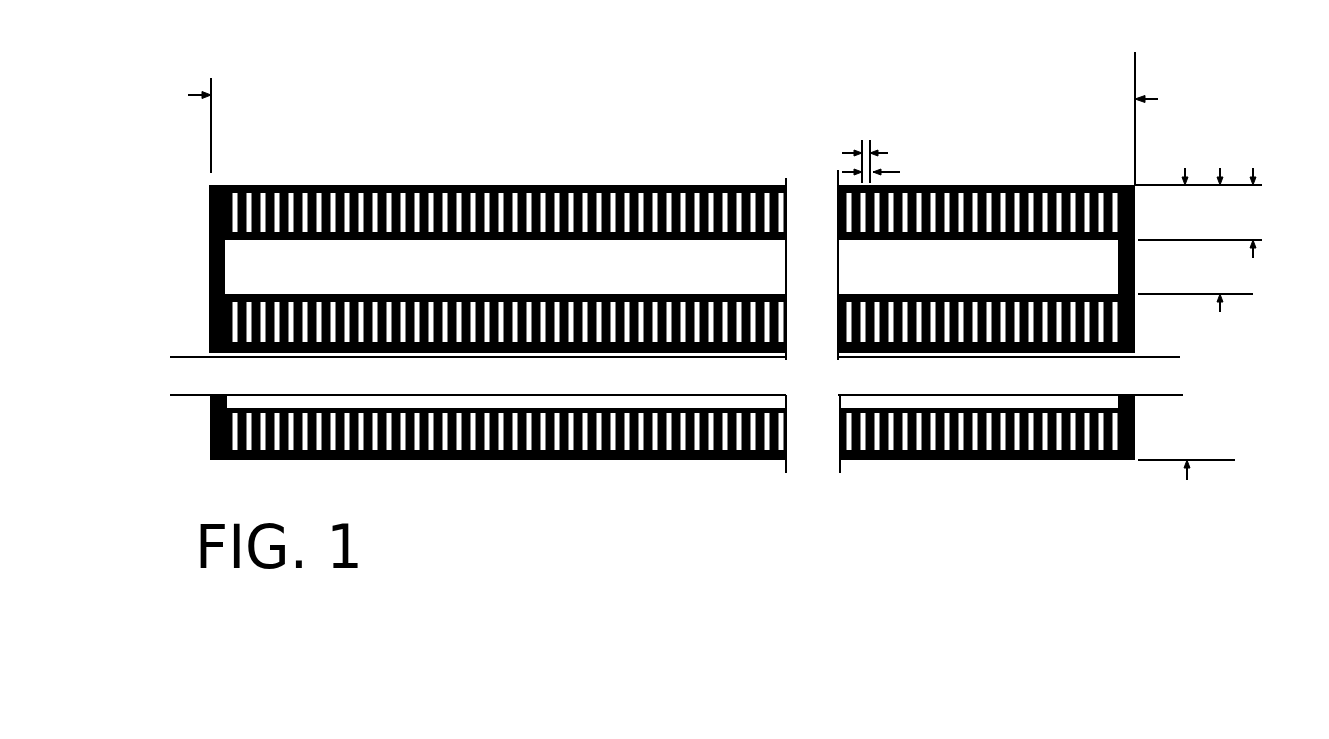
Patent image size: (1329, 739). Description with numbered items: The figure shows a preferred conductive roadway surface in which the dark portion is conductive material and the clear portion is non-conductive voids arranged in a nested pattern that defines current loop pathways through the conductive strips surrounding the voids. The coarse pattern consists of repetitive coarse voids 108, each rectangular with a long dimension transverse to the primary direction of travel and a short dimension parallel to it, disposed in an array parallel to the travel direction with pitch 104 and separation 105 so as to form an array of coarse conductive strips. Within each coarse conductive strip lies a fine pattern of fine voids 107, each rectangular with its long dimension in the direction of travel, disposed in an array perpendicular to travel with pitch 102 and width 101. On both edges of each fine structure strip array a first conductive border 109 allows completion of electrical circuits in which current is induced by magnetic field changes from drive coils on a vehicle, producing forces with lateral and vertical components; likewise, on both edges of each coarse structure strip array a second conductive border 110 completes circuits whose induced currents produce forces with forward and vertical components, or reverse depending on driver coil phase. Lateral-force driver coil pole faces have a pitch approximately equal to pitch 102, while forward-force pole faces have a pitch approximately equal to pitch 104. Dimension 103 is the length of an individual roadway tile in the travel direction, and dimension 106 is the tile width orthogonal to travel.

The width 101 is at (888, 153).
The pitch 102 is at (900, 172).
The dimension 103 is at (1187, 485).
The pitch 104 is at (1220, 314).
The separation 105 is at (1253, 263).
The dimension 106 is at (1158, 99).
The fine void 107 is at (320, 190).
The coarse void 108 is at (670, 355).
The first conductive border 109 is at (455, 184).
The second conductive border 110 is at (211, 278).